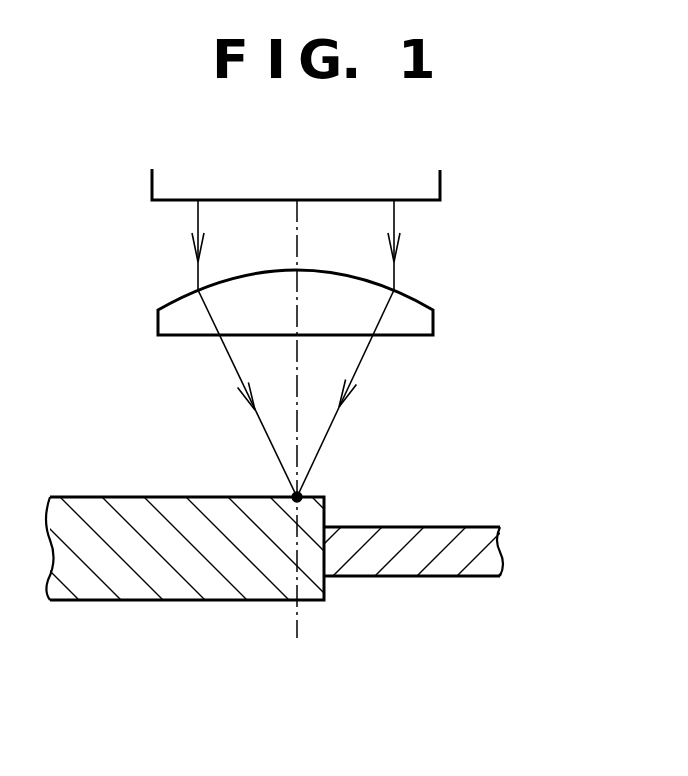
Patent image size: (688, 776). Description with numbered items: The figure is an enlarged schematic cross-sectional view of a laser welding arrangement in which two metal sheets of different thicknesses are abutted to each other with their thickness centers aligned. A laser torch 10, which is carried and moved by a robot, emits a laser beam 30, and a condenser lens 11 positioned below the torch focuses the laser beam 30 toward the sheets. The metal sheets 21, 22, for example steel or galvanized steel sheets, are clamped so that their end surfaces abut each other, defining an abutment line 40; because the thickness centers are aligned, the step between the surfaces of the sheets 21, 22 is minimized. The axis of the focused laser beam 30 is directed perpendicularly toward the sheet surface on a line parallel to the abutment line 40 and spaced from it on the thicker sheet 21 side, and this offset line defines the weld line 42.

The laser torch 10 is at (440, 182).
The laser beam 30 is at (394, 218).
The condenser lens 11 is at (157, 320).
The metal sheet 21 is at (130, 513).
The metal sheet 22 is at (427, 533).
The weld line 42 is at (303, 495).
The abutment line 40 is at (326, 566).